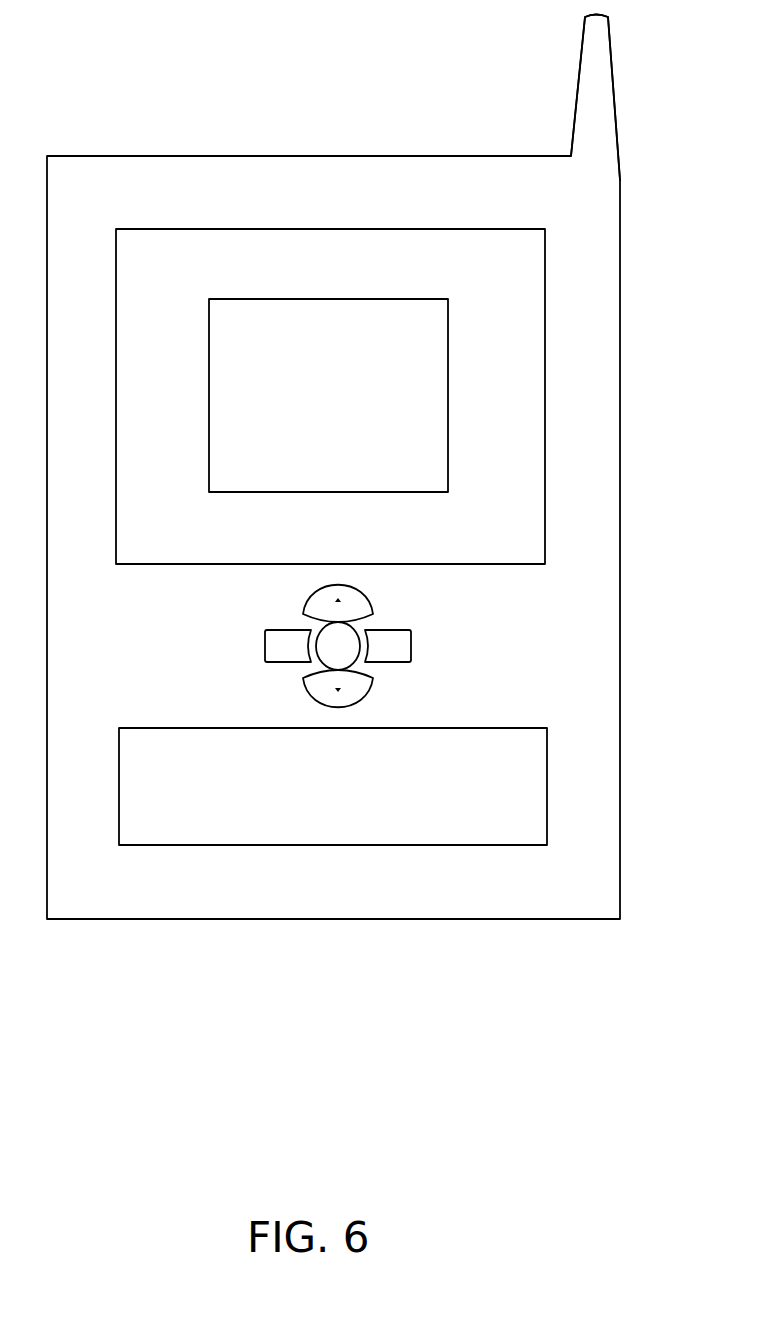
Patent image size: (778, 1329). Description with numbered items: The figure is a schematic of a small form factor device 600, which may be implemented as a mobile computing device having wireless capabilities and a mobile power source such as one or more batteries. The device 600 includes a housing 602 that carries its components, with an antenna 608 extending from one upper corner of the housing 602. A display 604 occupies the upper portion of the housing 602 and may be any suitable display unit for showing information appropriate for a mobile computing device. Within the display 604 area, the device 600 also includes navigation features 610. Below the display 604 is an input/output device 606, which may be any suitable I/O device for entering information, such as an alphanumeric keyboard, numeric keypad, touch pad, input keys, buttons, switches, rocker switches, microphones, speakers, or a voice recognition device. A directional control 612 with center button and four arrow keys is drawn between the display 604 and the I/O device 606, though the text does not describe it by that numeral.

The small form factor device 600 is at (328, 1203).
The housing 602 is at (620, 522).
The display 604 is at (480, 229).
The input/output (I/O) device 606 is at (547, 757).
The antenna 608 is at (580, 60).
The navigation features 610 is at (389, 299).
The navigation control 612 is at (428, 636).